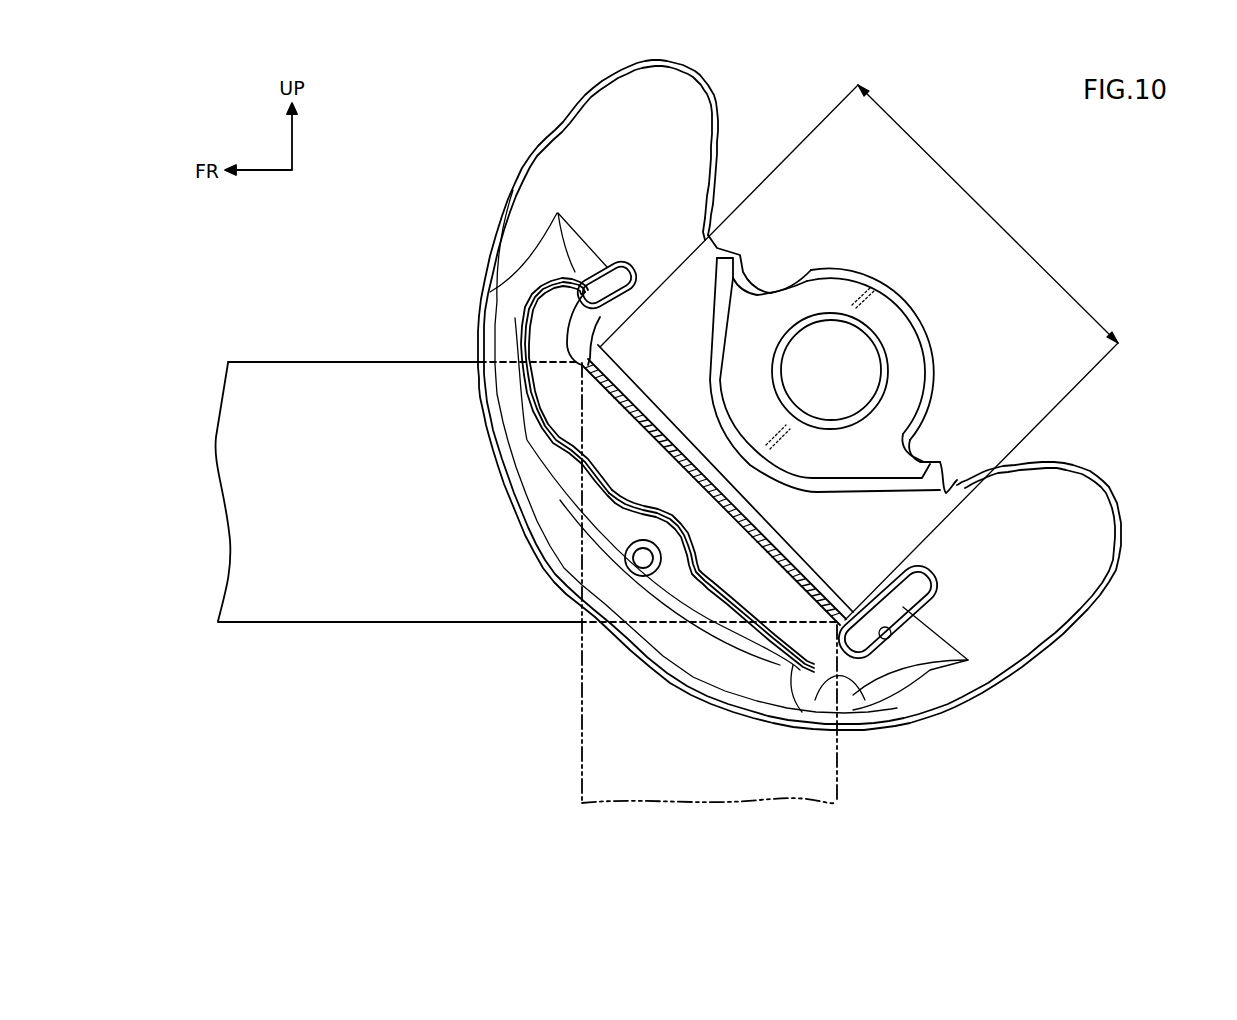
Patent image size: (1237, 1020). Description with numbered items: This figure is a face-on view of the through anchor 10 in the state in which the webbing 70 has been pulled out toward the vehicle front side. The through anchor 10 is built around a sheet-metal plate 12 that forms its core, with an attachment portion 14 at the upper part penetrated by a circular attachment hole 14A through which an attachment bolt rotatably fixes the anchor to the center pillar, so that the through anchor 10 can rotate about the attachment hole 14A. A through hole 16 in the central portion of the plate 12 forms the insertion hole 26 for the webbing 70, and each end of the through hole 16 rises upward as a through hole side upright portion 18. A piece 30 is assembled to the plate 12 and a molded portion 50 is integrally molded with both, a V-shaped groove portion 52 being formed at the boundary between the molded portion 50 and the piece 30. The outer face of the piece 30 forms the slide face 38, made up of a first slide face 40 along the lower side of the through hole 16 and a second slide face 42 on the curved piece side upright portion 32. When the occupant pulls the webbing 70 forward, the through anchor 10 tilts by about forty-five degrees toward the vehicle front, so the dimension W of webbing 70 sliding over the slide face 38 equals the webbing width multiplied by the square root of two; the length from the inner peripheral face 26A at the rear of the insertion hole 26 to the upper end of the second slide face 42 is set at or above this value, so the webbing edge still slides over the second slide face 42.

The through anchor 10 is at (1127, 460).
The plate 12 is at (852, 265).
The attachment portion 14 is at (877, 313).
The attachment hole 14A is at (873, 355).
The through hole 16 is at (768, 468).
The through hole side upright portion 18 is at (613, 285).
The insertion hole 26 is at (913, 588).
The inner peripheral face 26A is at (898, 607).
The piece 30 is at (568, 338).
The piece side upright portion 32 is at (550, 313).
The slide face 38 is at (607, 459).
The first slide face 40 is at (723, 560).
The second slide face 42 is at (550, 320).
The molded portion 50 is at (577, 147).
The groove portion 52 is at (607, 307).
The webbing 70 is at (837, 777).
The dimension W is at (990, 213).